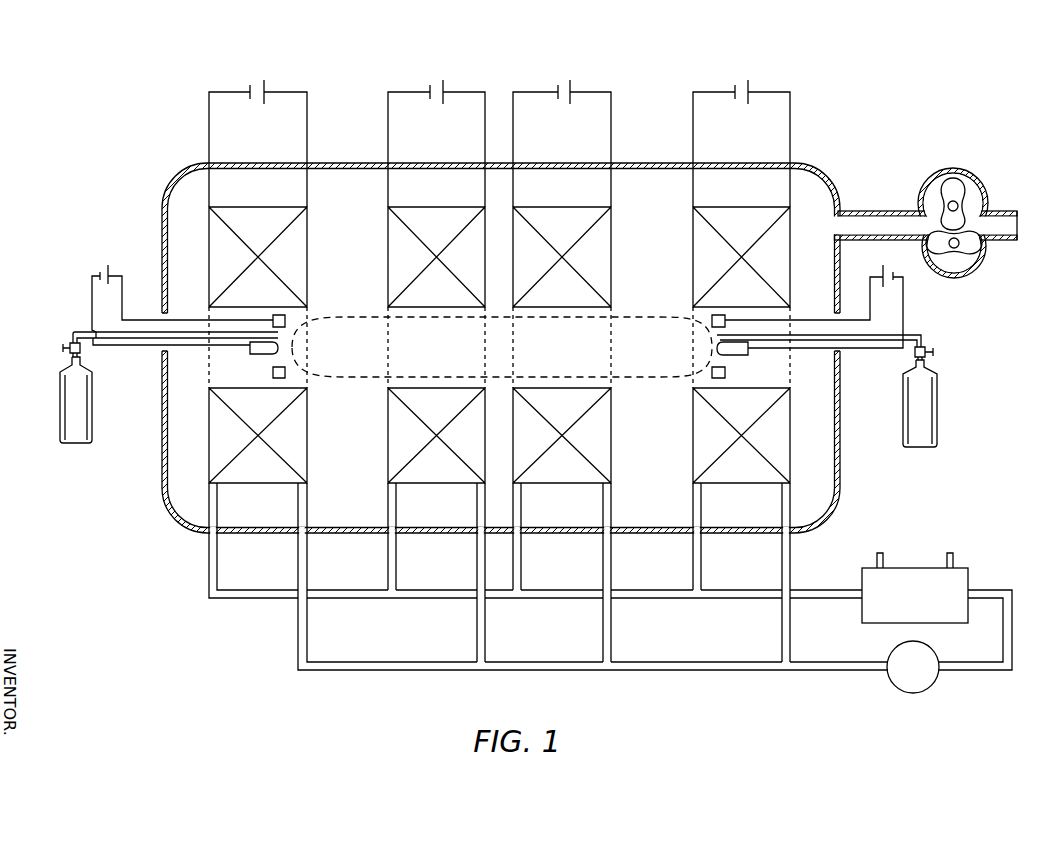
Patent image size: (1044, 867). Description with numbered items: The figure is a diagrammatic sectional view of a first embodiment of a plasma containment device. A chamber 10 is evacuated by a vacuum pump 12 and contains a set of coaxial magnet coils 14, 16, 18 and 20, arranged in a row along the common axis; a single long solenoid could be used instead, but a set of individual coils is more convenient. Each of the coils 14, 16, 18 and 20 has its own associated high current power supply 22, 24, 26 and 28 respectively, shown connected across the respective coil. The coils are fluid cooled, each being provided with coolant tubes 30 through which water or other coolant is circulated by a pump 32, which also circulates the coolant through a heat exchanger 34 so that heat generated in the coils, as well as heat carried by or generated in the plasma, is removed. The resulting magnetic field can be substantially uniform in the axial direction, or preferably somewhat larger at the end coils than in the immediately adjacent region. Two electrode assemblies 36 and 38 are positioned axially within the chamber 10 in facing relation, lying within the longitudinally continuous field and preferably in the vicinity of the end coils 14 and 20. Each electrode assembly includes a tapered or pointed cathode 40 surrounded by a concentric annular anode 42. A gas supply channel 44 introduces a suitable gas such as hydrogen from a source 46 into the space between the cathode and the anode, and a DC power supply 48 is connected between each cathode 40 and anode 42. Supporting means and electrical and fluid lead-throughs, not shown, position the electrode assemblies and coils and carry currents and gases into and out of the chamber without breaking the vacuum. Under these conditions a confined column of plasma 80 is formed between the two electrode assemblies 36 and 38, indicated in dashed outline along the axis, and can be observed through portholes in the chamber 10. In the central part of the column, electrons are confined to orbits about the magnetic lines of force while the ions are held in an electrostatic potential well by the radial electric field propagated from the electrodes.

The chamber 10 is at (167, 186).
The vacuum pump 12 is at (980, 190).
The magnet coil 14 is at (268, 207).
The magnet coil 16 is at (448, 207).
The magnet coil 18 is at (567, 207).
The magnet coil 20 is at (750, 207).
The high current power supply 22 is at (256, 83).
The high current power supply 24 is at (440, 84).
The high current power supply 26 is at (565, 84).
The high current power supply 28 is at (748, 84).
The coolant tubes 30 is at (298, 624).
The pump 32 is at (932, 686).
The heat exchanger 34 is at (968, 574).
The electrode assembly 36 is at (241, 357).
The electrode assembly 38 is at (755, 357).
The cathode 40 is at (278, 348).
The anode 42 is at (285, 321).
The gas supply channel 44 is at (105, 342).
The source 46 is at (91, 420).
The DC power supply 48 is at (104, 268).
The column of plasma 80 is at (502, 347).